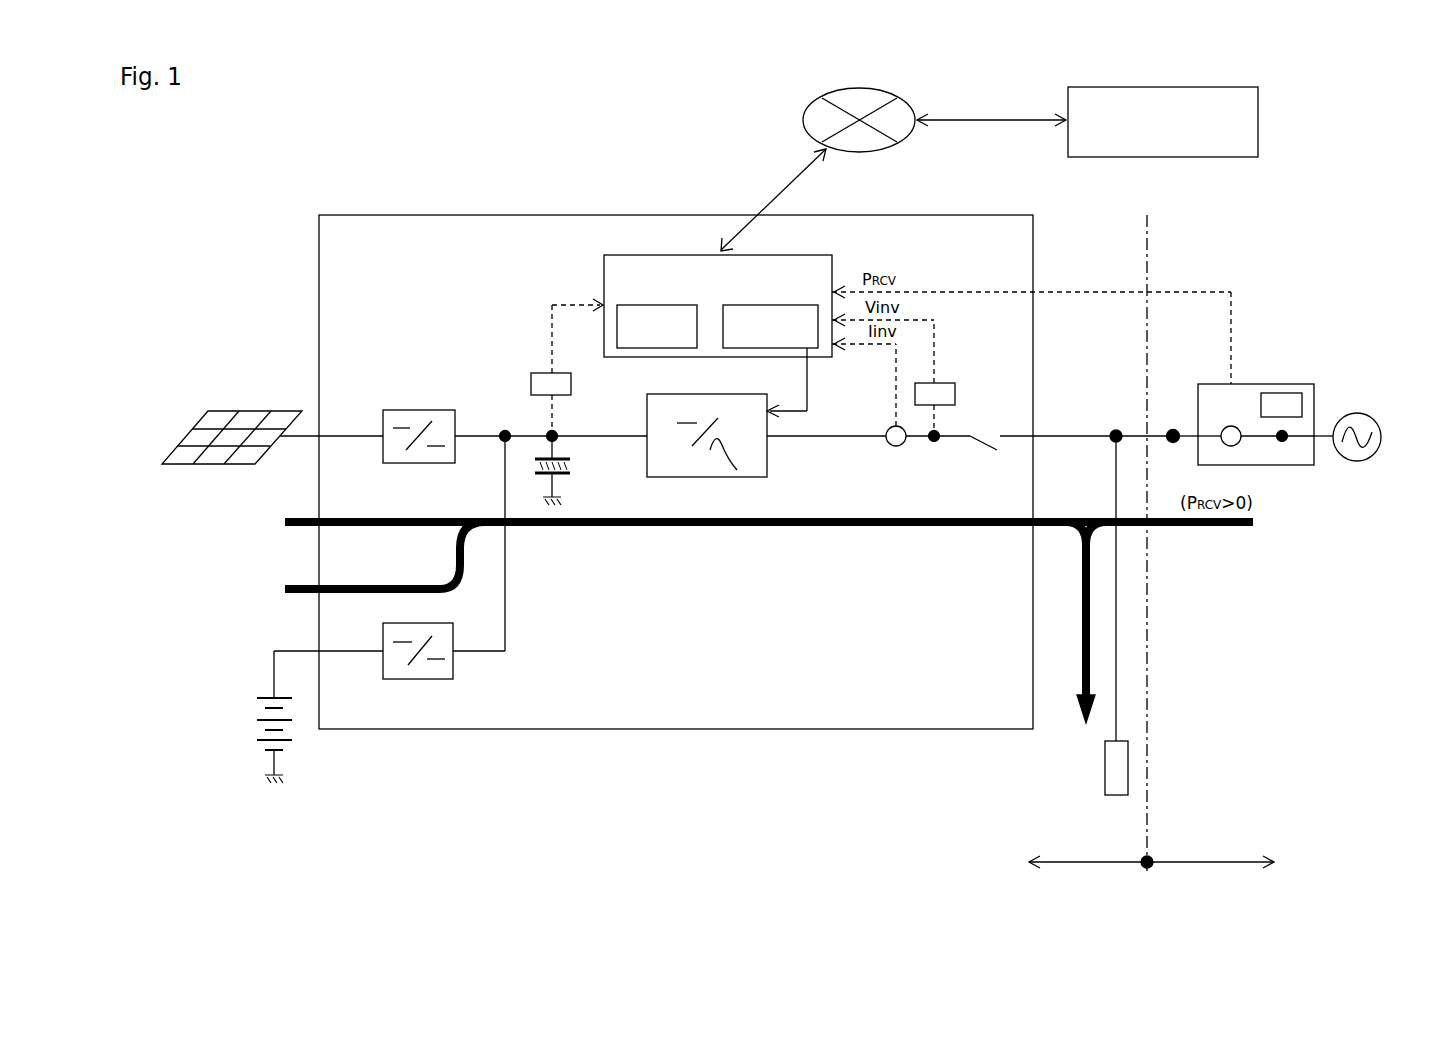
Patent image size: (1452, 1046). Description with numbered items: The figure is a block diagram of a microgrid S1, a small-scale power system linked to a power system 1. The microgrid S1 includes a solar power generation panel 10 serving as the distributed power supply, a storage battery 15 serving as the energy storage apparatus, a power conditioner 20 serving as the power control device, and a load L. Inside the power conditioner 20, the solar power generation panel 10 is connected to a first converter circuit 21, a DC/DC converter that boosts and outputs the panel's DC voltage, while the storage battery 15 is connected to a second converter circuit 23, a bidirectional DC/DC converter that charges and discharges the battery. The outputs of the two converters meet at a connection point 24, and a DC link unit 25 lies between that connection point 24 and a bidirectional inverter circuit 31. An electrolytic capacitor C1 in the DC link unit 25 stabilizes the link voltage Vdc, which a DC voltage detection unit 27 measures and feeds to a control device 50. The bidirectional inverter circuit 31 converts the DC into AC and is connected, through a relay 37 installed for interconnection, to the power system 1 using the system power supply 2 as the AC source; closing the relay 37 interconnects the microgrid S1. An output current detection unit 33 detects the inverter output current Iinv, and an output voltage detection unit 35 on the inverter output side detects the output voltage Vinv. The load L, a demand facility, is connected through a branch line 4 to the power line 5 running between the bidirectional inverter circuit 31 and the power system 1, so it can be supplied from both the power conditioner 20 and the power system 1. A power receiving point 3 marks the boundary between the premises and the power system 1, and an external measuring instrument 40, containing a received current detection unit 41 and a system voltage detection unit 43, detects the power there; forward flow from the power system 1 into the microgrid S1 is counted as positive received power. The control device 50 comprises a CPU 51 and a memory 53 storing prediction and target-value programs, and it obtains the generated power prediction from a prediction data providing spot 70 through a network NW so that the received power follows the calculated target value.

The power system 1 is at (1181, 543).
The system power supply 2 is at (1357, 413).
The power receiving point 3 is at (1173, 428).
The branch line 4 is at (1118, 618).
The power line 5 is at (1068, 432).
The solar power generation panel 10 is at (212, 462).
The storage battery 15 is at (260, 726).
The power conditioner 20 is at (676, 454).
The first converter circuit 21 is at (416, 410).
The second converter circuit 23 is at (420, 679).
The connection point 24 is at (505, 432).
The DC link unit 25 is at (570, 422).
The DC voltage detection unit 27 is at (541, 373).
The bidirectional inverter circuit 31 is at (767, 458).
The output current detection unit 33 is at (895, 447).
The output voltage detection unit 35 is at (942, 383).
The relay 37 is at (975, 448).
The external measuring instrument 40 is at (1252, 384).
The received current detection unit 41 is at (1225, 428).
The system voltage detection unit 43 is at (1293, 394).
The control device 50 is at (641, 255).
The CPU 51 is at (690, 306).
The memory 53 is at (768, 306).
The prediction data providing spot 70 is at (1258, 98).
The network NW is at (875, 98).
The load L is at (1117, 765).
The electrolytic capacitor C1 is at (570, 472).
The microgrid S1 is at (460, 760).